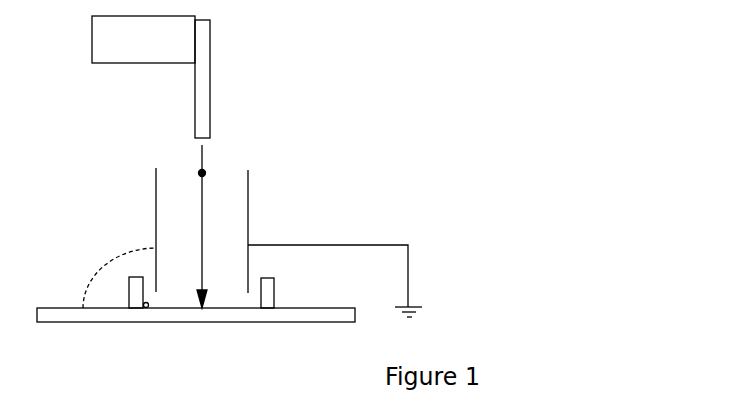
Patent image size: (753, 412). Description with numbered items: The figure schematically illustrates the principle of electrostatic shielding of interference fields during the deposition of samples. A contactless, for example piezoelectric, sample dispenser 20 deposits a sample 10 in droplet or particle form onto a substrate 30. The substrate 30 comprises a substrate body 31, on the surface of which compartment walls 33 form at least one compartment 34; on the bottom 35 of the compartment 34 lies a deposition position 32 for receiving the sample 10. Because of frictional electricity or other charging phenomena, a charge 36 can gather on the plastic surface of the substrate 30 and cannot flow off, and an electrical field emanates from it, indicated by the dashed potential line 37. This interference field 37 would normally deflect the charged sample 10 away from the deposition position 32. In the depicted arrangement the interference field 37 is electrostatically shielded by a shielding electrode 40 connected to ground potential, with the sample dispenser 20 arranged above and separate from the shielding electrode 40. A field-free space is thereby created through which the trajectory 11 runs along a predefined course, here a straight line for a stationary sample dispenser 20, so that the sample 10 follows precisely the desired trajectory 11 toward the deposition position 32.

The sample 10 is at (202, 173).
The trajectory 11 is at (202, 213).
The sample dispenser 20 is at (213, 60).
The substrate 30 is at (315, 308).
The substrate body 31 is at (285, 318).
The deposition position 32 is at (202, 308).
The compartment walls 33 is at (275, 292).
The compartment 34 is at (236, 287).
The bottom 35 is at (257, 308).
The charge 36 is at (142, 309).
The potential line 37 is at (88, 277).
The shielding electrode 40 is at (248, 212).